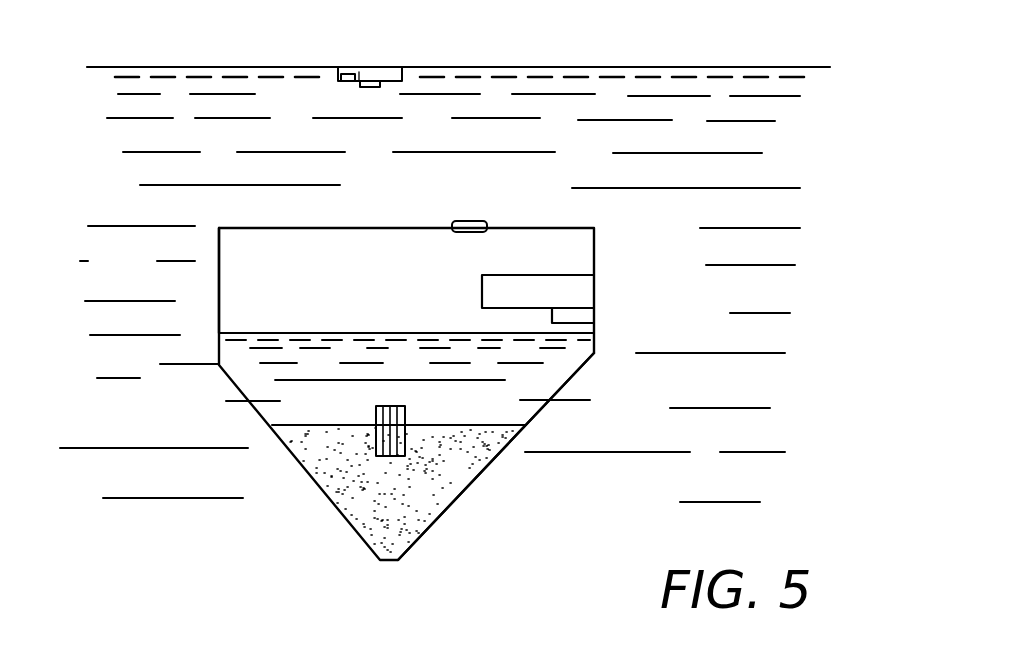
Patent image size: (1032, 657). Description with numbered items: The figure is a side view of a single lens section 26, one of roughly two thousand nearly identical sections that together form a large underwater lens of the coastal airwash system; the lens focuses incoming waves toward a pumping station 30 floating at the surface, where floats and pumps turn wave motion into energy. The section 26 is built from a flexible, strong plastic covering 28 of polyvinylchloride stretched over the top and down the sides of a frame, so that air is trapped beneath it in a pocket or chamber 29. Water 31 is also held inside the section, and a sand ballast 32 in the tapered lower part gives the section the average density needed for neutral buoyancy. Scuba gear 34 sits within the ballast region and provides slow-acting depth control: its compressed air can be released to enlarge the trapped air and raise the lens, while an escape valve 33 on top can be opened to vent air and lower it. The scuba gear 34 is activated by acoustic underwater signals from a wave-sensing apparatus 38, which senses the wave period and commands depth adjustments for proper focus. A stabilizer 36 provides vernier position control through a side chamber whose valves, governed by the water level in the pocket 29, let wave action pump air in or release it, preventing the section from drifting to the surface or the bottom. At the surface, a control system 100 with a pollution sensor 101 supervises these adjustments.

The lens section 26 is at (603, 231).
The plastic covering 28 is at (217, 243).
The air pocket 29 is at (253, 293).
The pumping station 30 is at (402, 78).
The water 31 is at (493, 395).
The sand ballast 32 is at (413, 482).
The escape valve 33 is at (463, 220).
The scuba gear 34 is at (376, 414).
The stabilizer 36 is at (572, 295).
The wave-sensing apparatus 38 is at (573, 316).
The control system 100 is at (338, 79).
The pollution sensor 101 is at (359, 72).